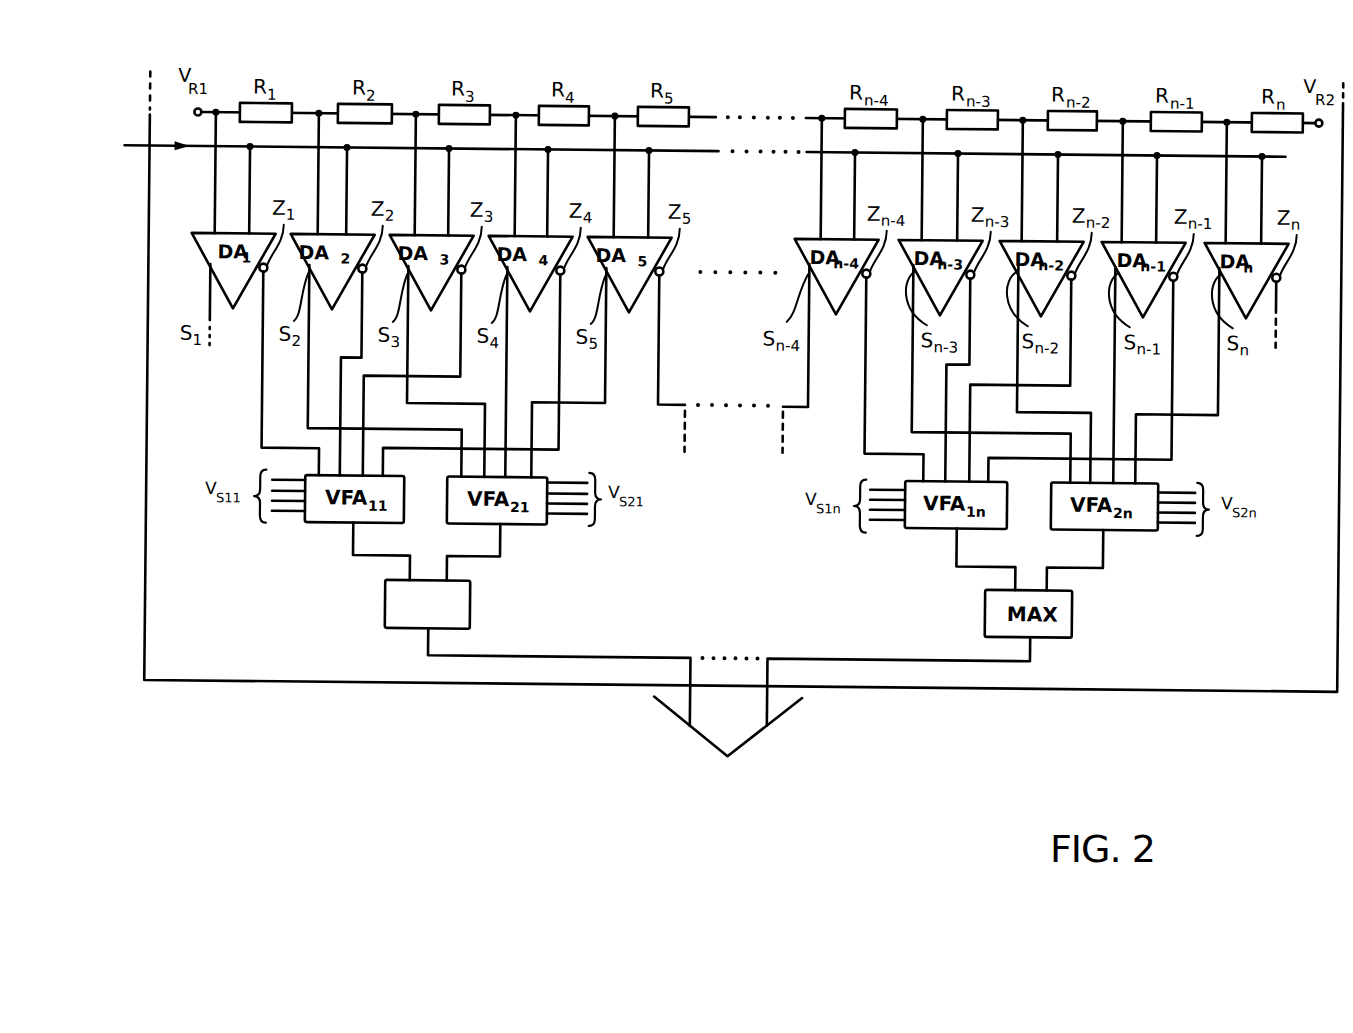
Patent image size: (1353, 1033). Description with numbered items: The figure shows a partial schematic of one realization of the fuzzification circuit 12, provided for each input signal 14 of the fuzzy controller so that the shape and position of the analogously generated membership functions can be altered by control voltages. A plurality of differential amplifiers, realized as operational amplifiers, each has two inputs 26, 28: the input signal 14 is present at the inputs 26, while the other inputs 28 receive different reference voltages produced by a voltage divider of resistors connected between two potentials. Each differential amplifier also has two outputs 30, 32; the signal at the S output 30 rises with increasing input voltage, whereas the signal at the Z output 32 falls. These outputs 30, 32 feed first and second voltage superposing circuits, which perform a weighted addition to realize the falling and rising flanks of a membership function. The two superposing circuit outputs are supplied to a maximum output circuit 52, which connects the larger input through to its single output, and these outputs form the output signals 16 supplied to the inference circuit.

The fuzzification circuit 12 is at (168, 661).
The input signal 14 is at (139, 146).
The output signal 16 is at (720, 713).
The input of differential amplifier 26 is at (252, 231).
The input of differential amplifier 28 is at (217, 230).
The S output 30 is at (214, 262).
The Z output 32 is at (268, 271).
The maximum output circuit 52 is at (391, 616).